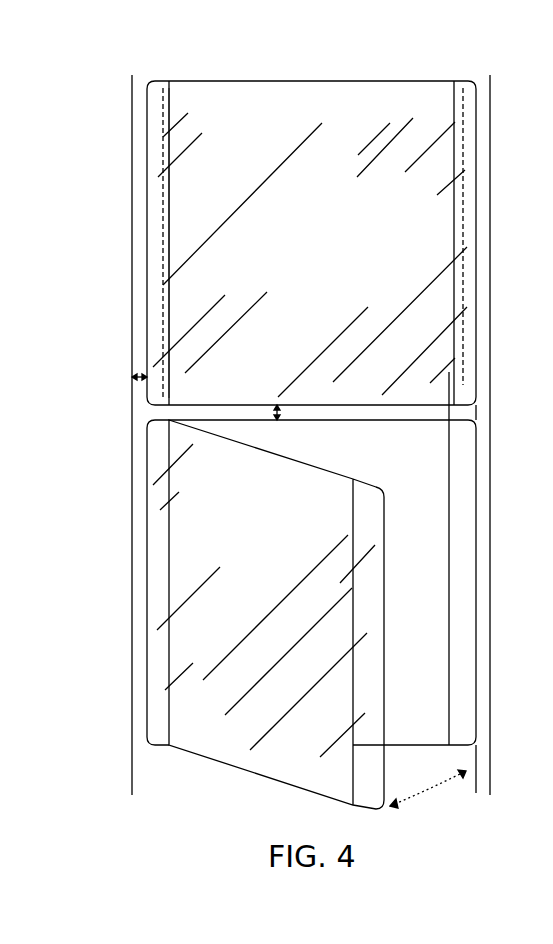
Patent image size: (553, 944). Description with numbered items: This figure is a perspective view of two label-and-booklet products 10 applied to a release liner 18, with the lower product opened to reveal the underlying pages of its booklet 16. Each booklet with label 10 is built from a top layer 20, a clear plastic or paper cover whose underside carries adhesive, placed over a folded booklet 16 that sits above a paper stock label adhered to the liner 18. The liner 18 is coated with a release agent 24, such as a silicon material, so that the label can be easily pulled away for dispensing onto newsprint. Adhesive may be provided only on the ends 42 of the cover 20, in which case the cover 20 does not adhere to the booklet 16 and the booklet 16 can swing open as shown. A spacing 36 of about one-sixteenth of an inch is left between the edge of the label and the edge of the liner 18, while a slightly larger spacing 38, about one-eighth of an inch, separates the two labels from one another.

The booklet with label 10 is at (308, 435).
The booklet 16 is at (422, 637).
The release liner 18 is at (345, 558).
The top layer 20 is at (263, 105).
The release agent 24 is at (165, 298).
The spacing 36 is at (135, 377).
The spacing 38 is at (277, 412).
The ends 42 is at (157, 126).